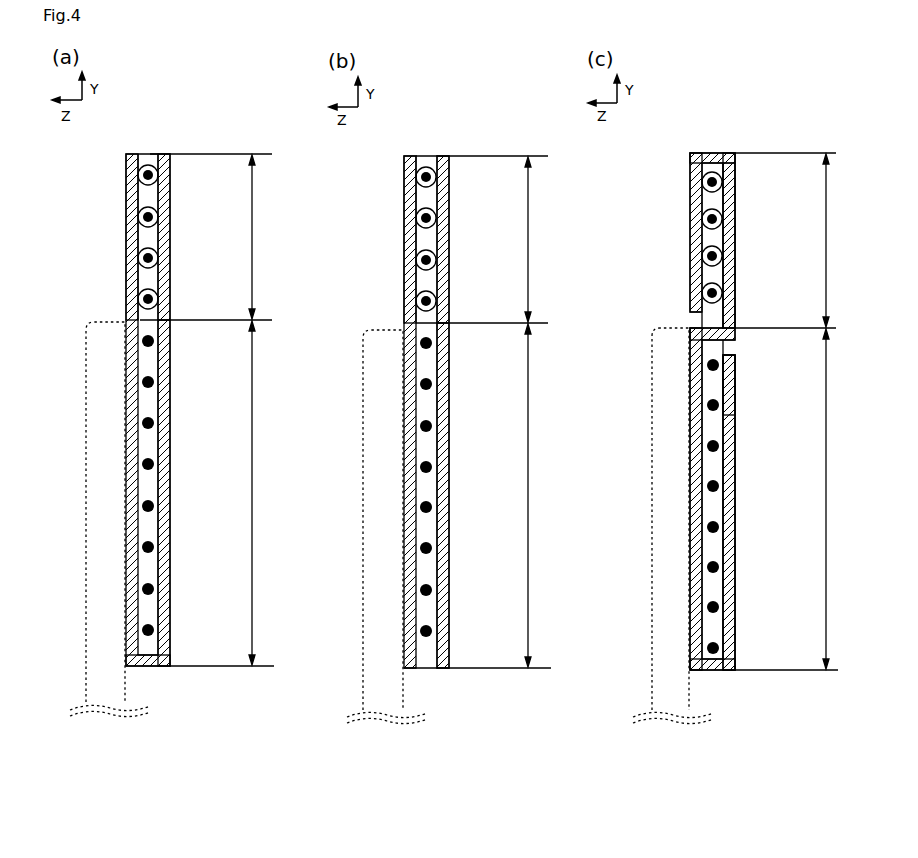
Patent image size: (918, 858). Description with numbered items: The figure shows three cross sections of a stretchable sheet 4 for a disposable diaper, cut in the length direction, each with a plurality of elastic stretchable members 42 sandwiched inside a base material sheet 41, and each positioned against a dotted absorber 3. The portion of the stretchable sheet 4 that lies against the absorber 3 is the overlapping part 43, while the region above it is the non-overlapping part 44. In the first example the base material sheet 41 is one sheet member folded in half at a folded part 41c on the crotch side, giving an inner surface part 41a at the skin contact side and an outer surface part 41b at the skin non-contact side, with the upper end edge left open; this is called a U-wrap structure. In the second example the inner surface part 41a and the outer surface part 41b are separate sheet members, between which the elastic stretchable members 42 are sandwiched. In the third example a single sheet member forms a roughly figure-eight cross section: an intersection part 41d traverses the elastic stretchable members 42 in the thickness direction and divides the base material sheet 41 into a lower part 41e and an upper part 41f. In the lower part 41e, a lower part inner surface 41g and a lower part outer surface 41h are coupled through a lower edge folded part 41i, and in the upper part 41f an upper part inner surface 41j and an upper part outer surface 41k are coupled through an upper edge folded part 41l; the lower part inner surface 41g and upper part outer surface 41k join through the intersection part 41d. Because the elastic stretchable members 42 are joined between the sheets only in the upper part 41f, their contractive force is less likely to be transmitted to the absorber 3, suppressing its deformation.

The absorber 3 is at (110, 534).
The stretchable sheet 4 is at (174, 150).
The base material sheet 41 is at (171, 372).
The inner surface part 41a is at (126, 237).
The outer surface part 41b is at (170, 237).
The folded part 41c is at (153, 668).
The intersection part 41d is at (712, 328).
The lower part 41e is at (746, 369).
The upper part 41f is at (746, 184).
The lower part inner surface 41g is at (697, 453).
The lower part outer surface 41h is at (736, 463).
The lower edge folded part 41i is at (713, 672).
The upper part inner surface 41j is at (690, 238).
The upper part outer surface 41k is at (735, 238).
The upper edge folded part 41l is at (712, 152).
The elastic stretchable member 42 is at (154, 424).
The overlapping part 43 is at (521, 495).
The non-overlapping part 44 is at (494, 240).